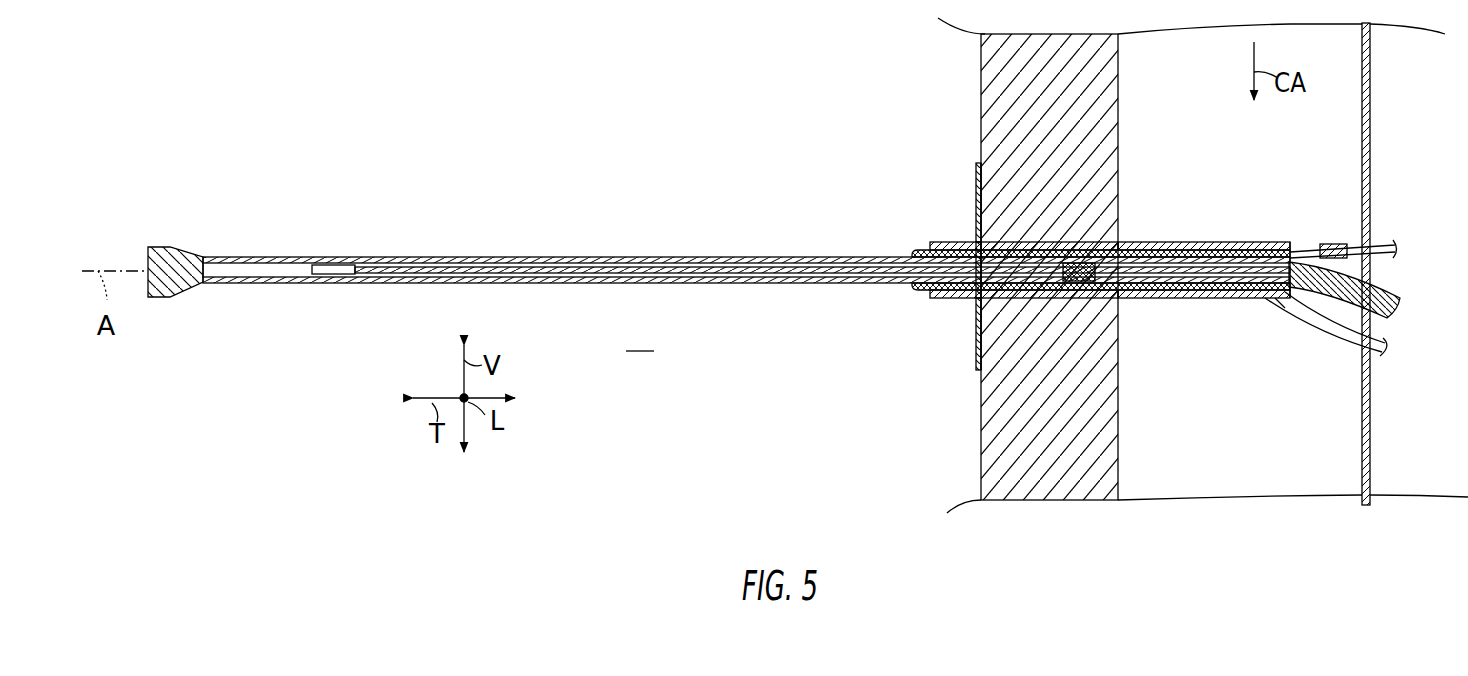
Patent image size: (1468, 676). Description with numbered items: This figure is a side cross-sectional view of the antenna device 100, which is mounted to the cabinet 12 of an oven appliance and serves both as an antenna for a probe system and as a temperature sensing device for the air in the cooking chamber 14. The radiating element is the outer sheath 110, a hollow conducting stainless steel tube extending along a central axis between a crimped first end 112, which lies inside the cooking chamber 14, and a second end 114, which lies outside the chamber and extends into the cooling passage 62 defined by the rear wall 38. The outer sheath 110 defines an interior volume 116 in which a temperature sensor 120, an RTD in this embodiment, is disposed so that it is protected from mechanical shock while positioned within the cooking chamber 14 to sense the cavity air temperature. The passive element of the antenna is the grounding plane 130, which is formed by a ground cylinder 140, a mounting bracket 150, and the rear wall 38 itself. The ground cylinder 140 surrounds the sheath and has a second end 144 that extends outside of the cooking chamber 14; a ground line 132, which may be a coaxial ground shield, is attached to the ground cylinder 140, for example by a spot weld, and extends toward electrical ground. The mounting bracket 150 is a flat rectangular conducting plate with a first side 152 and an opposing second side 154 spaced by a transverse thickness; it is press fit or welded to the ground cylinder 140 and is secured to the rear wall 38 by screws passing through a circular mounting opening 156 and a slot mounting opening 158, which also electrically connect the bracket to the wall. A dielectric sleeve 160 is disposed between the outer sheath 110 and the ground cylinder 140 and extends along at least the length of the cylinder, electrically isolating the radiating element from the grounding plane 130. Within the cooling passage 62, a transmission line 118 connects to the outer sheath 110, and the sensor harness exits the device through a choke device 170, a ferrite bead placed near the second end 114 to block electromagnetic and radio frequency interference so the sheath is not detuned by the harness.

The cabinet 12 is at (981, 490).
The cooking chamber 14 is at (640, 335).
The rear wall 38 is at (977, 85).
The cooling passage 62 is at (1331, 85).
The antenna device 100 is at (469, 114).
The outer sheath 110 is at (500, 257).
The first end 112 is at (160, 226).
The second end 114 is at (1290, 242).
The interior volume 116 is at (284, 275).
The transmission line 118 is at (1395, 298).
The temperature sensor 120 is at (326, 265).
The grounding plane 130 is at (1013, 304).
The ground line 132 is at (1310, 342).
The ground cylinder 140 is at (1205, 242).
The second end 144 is at (1278, 322).
The mounting bracket 150 is at (976, 313).
The first side 152 is at (973, 226).
The second side 154 is at (987, 226).
The circular mounting opening 156 is at (973, 176).
The slot mounting opening 158 is at (973, 345).
The dielectric sleeve 160 is at (912, 251).
The choke device 170 is at (1338, 244).